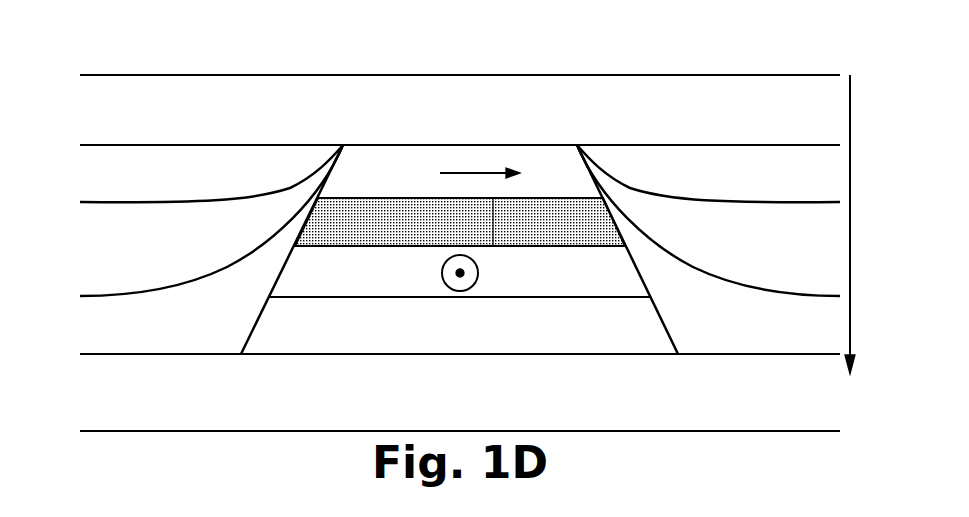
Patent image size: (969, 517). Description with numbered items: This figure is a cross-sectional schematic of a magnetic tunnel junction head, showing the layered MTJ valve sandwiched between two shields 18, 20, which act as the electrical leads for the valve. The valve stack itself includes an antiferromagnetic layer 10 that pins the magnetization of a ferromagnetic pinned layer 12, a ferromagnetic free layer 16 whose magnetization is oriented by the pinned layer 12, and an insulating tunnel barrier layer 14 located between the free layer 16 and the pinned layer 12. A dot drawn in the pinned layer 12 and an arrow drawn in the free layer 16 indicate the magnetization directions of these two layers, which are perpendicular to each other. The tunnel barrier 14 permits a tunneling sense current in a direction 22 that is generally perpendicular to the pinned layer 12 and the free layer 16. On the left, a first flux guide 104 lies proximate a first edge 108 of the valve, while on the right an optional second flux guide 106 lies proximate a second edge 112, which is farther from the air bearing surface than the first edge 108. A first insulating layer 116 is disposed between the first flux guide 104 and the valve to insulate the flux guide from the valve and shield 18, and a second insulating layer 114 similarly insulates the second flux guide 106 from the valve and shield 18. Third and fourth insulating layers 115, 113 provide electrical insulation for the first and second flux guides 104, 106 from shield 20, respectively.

The antiferromagnetic layer 10 is at (459, 325).
The ferromagnetic pinned layer 12 is at (482, 272).
The insulating tunnel barrier layer 14 is at (460, 222).
The ferromagnetic free layer 16 is at (498, 175).
The shield 18 is at (460, 399).
The shield 20 is at (460, 110).
The direction of tunneling sense current 22 is at (864, 224).
The first flux guide 104 is at (211, 220).
The second flux guide 106 is at (708, 220).
The first edge 108 is at (281, 275).
The second edge 112 is at (621, 218).
The fourth insulating layer 113 is at (708, 171).
The second insulating layer 114 is at (759, 328).
The third insulating layer 115 is at (211, 173).
The first insulating layer 116 is at (160, 330).